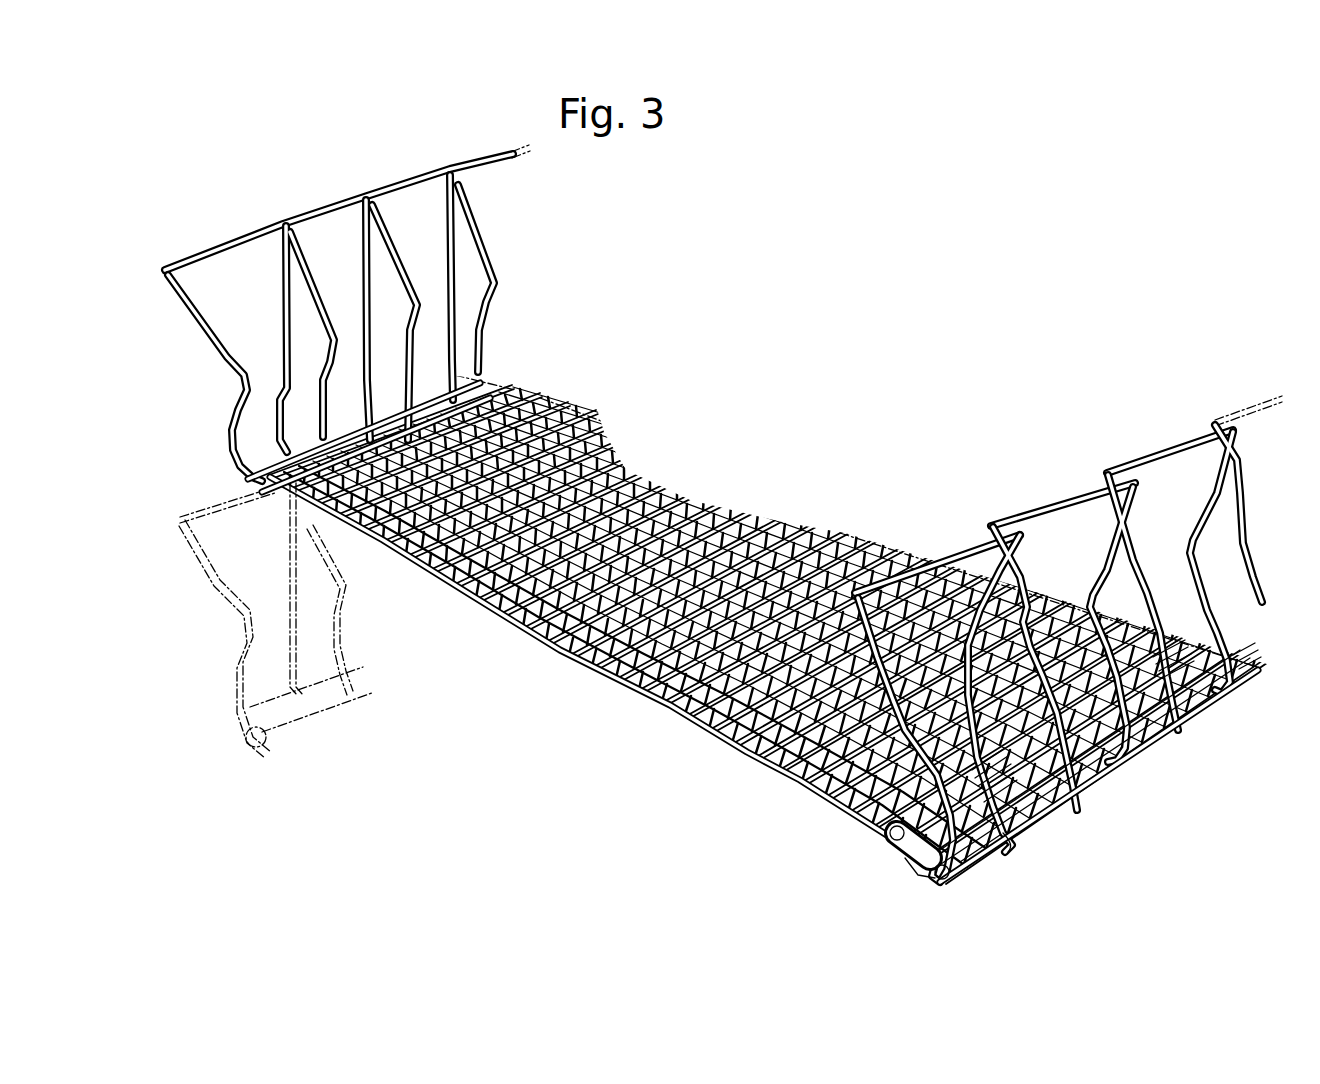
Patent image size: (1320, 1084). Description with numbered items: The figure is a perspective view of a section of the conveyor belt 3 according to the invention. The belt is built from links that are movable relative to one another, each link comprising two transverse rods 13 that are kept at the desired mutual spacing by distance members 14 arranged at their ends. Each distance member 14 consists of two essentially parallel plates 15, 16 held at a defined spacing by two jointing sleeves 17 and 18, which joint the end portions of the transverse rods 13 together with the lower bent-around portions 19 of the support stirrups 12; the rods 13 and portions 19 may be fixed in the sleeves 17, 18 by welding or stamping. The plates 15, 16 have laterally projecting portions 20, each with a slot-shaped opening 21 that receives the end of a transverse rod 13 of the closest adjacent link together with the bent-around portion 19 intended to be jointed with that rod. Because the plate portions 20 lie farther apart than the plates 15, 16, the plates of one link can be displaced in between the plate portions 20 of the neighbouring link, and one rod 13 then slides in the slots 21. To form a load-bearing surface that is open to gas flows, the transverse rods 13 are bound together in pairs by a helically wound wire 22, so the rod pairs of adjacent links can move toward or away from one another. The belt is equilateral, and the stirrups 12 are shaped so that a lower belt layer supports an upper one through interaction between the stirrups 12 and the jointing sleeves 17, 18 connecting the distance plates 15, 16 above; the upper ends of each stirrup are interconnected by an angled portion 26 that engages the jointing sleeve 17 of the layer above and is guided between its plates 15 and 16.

The conveyor belt 3 is at (794, 628).
The support stirrup 12 is at (212, 361).
The transverse rod 13 is at (363, 741).
The distance member 14 is at (262, 758).
The plate 15 is at (903, 860).
The plate 16 is at (1007, 856).
The jointing sleeve 17 is at (915, 870).
The jointing sleeve 18 is at (968, 853).
The bent-around portion 19 is at (950, 886).
The plate portion 20 is at (1080, 808).
The slot-shaped opening 21 is at (1050, 821).
The helically wound wire 22 is at (816, 522).
The portion 26 is at (415, 176).